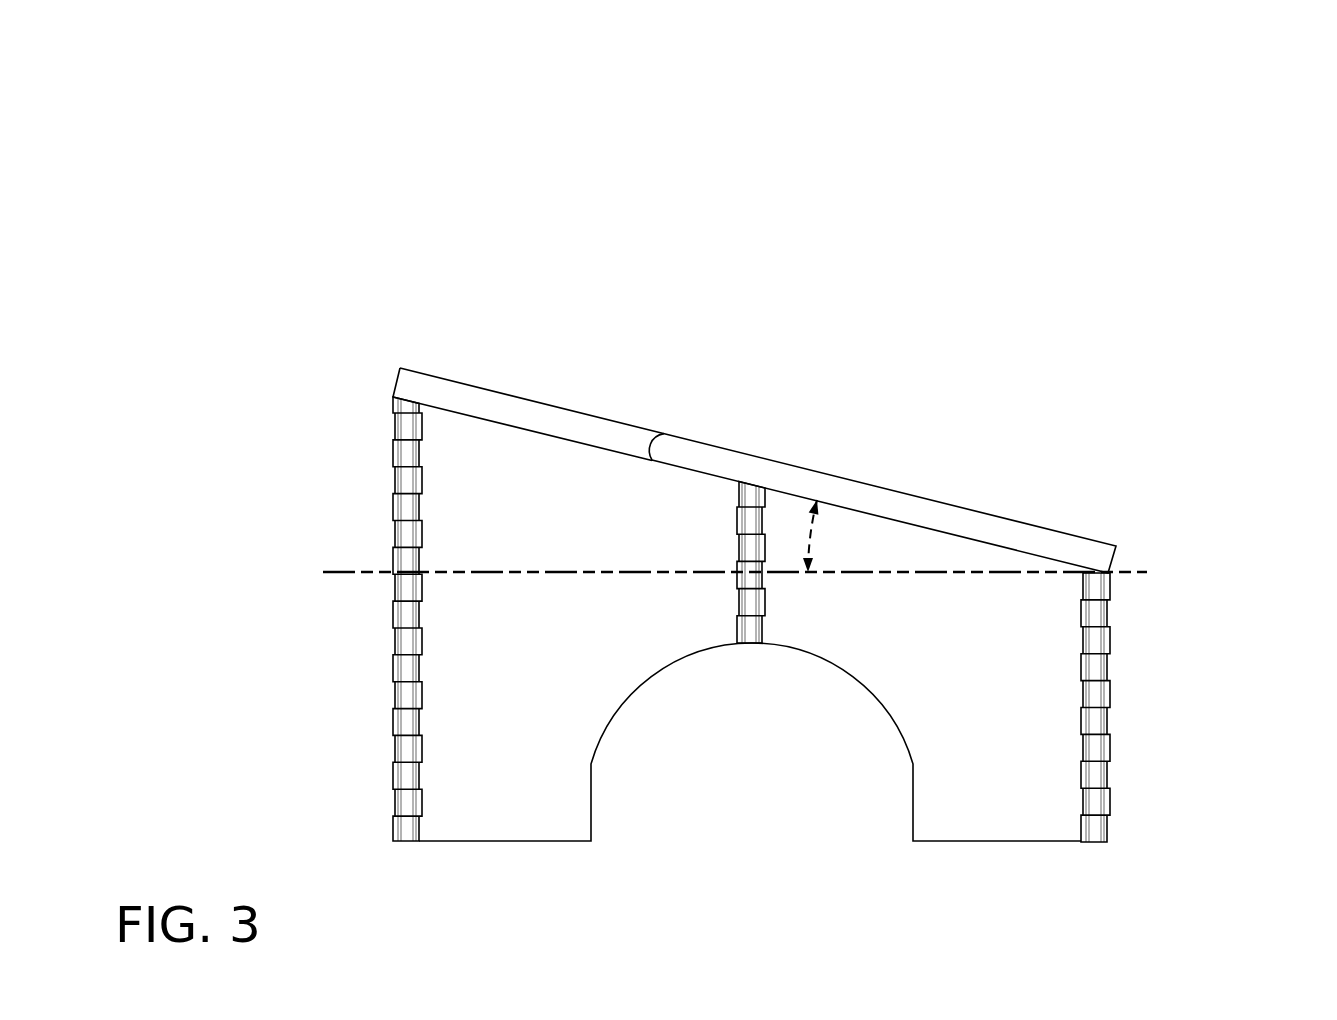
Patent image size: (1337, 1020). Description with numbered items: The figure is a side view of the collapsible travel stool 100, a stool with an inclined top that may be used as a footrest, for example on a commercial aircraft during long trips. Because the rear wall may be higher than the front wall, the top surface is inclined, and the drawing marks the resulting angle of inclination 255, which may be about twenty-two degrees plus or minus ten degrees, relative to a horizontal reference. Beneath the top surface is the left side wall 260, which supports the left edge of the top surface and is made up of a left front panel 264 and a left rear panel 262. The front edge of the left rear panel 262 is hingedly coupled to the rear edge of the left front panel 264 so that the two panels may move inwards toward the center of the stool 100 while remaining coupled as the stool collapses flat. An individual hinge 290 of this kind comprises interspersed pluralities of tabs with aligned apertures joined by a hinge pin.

The collapsible travel stool 100 is at (1150, 168).
The angle of inclination 255 is at (808, 548).
The left side wall 260 is at (1077, 855).
The left rear panel 262 is at (448, 480).
The left front panel 264 is at (1050, 700).
The individual hinge 290 is at (750, 640).